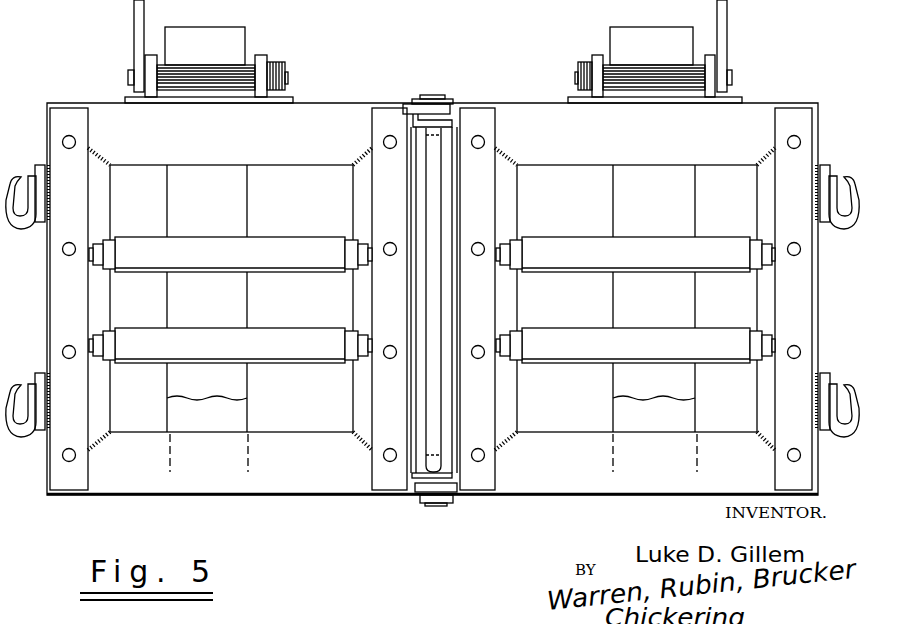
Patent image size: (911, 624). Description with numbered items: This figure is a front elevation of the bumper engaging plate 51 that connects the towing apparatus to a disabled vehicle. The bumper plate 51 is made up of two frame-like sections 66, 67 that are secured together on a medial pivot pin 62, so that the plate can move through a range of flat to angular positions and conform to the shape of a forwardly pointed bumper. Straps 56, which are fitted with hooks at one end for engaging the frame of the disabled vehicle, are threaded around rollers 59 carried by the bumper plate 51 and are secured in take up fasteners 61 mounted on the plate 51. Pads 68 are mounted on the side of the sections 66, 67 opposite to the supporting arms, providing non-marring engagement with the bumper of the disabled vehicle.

The bumper engaging plate 51 is at (396, 101).
The straps 56 is at (216, 58).
The rollers 59 is at (322, 258).
The take up fasteners 61 is at (269, 51).
The pivot pin 62 is at (434, 95).
The frame-like section 66 is at (342, 103).
The frame-like section 67 is at (545, 103).
The pads 68 is at (63, 306).